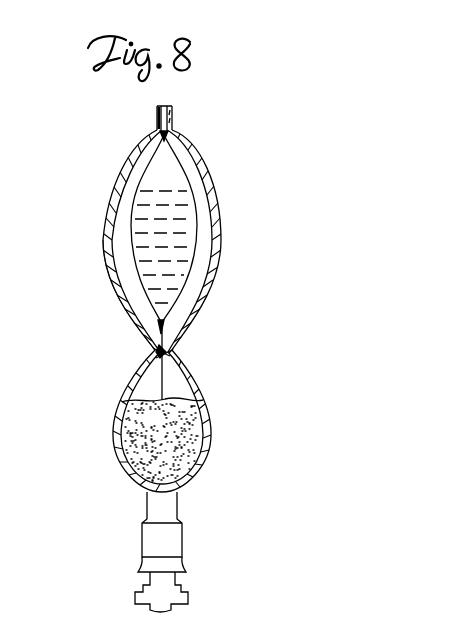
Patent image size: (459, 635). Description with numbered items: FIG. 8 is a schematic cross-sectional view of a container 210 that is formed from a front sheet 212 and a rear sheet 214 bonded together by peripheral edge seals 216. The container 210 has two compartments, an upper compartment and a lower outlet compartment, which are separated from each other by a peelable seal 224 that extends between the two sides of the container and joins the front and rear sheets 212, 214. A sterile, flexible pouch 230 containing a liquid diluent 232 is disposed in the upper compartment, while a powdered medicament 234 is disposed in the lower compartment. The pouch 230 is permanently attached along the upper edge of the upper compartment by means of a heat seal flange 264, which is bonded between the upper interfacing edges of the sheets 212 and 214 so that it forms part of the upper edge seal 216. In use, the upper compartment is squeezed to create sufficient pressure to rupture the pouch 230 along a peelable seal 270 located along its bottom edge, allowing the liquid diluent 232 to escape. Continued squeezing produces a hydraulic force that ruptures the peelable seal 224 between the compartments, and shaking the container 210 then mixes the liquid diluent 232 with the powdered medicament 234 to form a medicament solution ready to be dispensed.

The container 210 is at (123, 143).
The front sheet 212 is at (108, 237).
The rear sheet 214 is at (216, 200).
The peripheral edge seal 216 is at (173, 120).
The peelable seal 224 is at (170, 353).
The flexible pouch 230 is at (194, 180).
The liquid diluent 232 is at (176, 258).
The powdered medicament 234 is at (174, 428).
The heat seal flange 264 is at (174, 142).
The peelable seal 270 is at (196, 314).